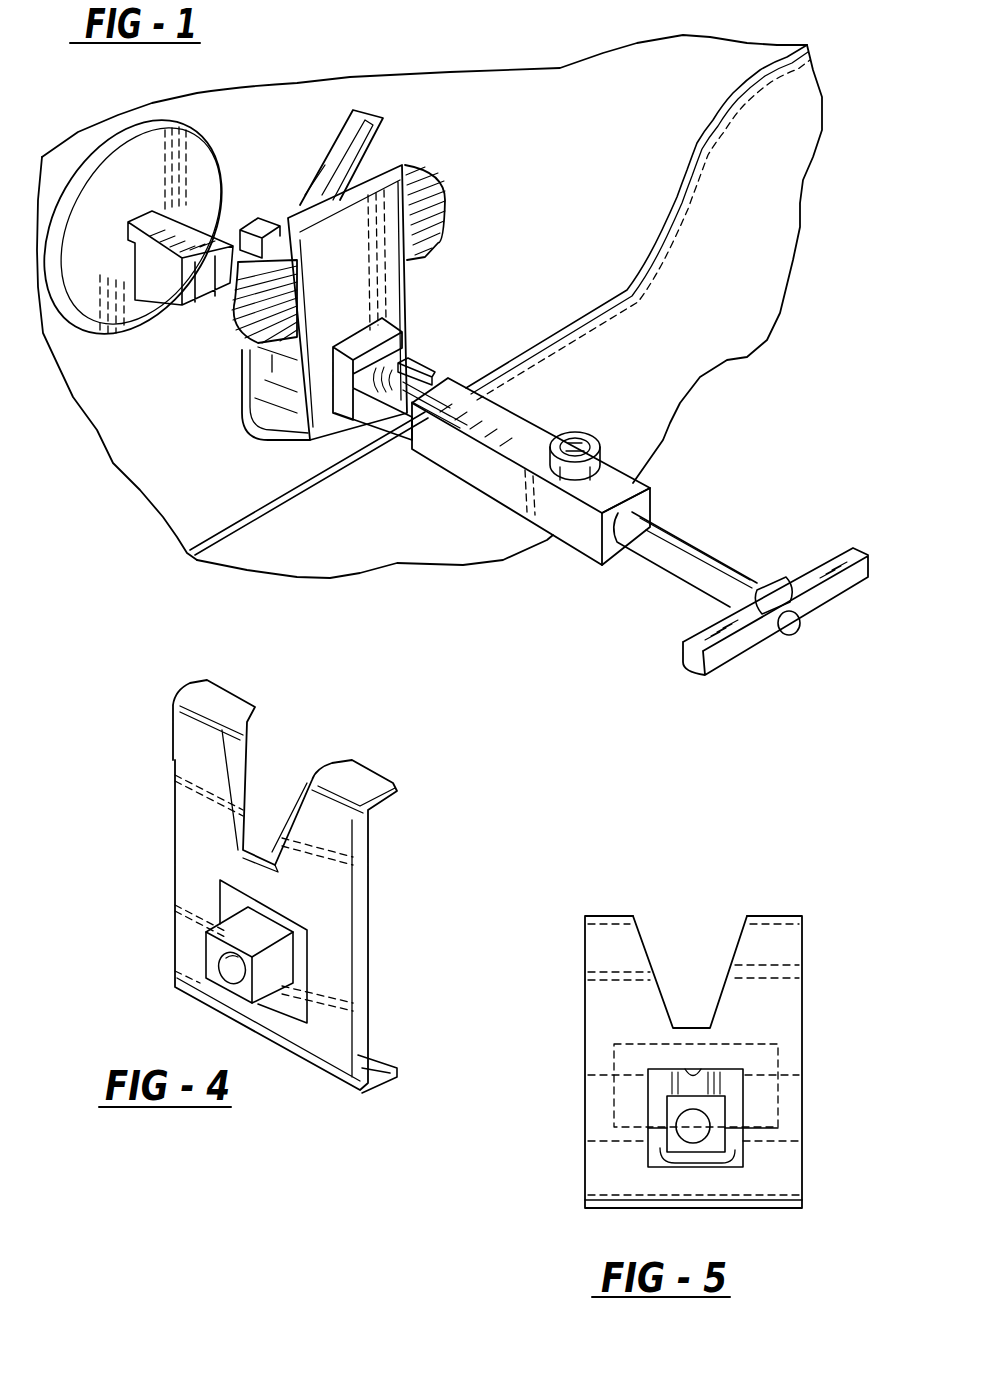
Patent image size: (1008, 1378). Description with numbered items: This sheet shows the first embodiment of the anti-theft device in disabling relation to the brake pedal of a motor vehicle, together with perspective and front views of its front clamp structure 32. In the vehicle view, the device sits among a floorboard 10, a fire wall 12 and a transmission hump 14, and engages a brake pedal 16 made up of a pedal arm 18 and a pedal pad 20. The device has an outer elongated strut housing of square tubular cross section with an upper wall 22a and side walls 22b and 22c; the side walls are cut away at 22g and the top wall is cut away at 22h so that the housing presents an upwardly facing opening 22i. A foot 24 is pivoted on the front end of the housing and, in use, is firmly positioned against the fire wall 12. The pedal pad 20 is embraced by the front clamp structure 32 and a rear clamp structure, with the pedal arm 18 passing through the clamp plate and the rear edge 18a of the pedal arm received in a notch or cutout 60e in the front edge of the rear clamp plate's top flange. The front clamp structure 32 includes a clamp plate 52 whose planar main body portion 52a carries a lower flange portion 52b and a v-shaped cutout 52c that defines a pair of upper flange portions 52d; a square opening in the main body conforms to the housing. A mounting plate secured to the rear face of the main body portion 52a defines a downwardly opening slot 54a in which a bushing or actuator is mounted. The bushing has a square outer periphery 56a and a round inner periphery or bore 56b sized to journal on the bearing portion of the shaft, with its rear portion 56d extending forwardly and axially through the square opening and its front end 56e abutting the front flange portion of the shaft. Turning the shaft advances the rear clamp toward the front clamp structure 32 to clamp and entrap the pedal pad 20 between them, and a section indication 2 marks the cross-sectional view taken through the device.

In FIG. 1, the section line 2- 2 is at (95, 200).
In FIG. 1, the floorboard 10 is at (326, 540).
In FIG. 1, the fire wall 12 is at (142, 384).
In FIG. 1, the transmission hump 14 is at (746, 251).
In FIG. 1, the brake pedal 16 is at (412, 116).
In FIG. 1, the pedal arm 18 is at (327, 145).
In FIG. 1, the rear edge of the pedal arm 18a is at (363, 160).
In FIG. 1, the pedal pad 20 is at (195, 325).
In FIG. 1, the upper wall 22a is at (533, 437).
In FIG. 1, the side wall 22b is at (563, 530).
In FIG. 1, the side wall 22c is at (660, 507).
In FIG. 1, the side wall cutaway 22g is at (380, 410).
In FIG. 1, the top wall cutaway 22h is at (437, 383).
In FIG. 1, the upwardly facing opening 22i is at (432, 354).
In FIG. 1, the foot 24 is at (130, 153).
In FIG. 4, the front clamp structure 32 is at (140, 763).
In FIG. 4, the clamp plate 52 is at (164, 849).
In FIG. 4, the main body portion 52a is at (190, 887).
In FIG. 4, the lower flange portion 52b is at (391, 1076).
In FIG. 5, the lower flange portion 52b is at (597, 1208).
In FIG. 4, the v-shaped cutout 52c is at (238, 765).
In FIG. 5, the v-shaped cutout 52c is at (736, 961).
In FIG. 4, the upper flange portions 52d is at (226, 697).
In FIG. 5, the upper flange portions 52d is at (607, 914).
In FIG. 5, the downwardly opening slot 54a is at (687, 1073).
In FIG. 4, the square outer periphery 56a is at (248, 930).
In FIG. 4, the round inner periphery or bore 56b is at (206, 967).
In FIG. 5, the round inner periphery or bore 56b is at (736, 1141).
In FIG. 4, the rear portion of the bushing 56d is at (275, 985).
In FIG. 4, the front end of the bushing 56e is at (221, 990).
In FIG. 5, the front end of the bushing 56e is at (670, 1150).
In FIG. 1, the notch or cutout 60e is at (340, 167).